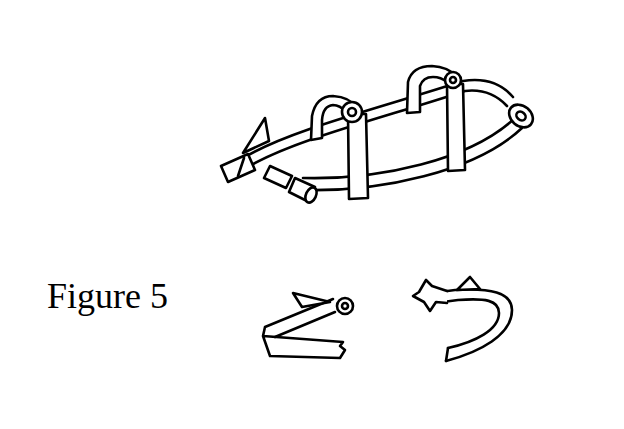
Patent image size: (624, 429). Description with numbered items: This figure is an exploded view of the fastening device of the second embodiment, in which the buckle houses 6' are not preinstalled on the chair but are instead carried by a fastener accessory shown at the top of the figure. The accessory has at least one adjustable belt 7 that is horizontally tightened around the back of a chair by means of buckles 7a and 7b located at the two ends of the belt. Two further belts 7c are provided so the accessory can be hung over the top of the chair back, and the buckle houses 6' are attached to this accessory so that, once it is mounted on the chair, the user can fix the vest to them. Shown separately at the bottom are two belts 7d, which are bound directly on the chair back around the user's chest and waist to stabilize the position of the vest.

The buckle house 6' is at (405, 132).
The adjustable belt 7 is at (427, 173).
The buckle 7a is at (228, 163).
The buckle 7b is at (263, 185).
The belt 7c is at (313, 108).
The belt 7d is at (300, 360).